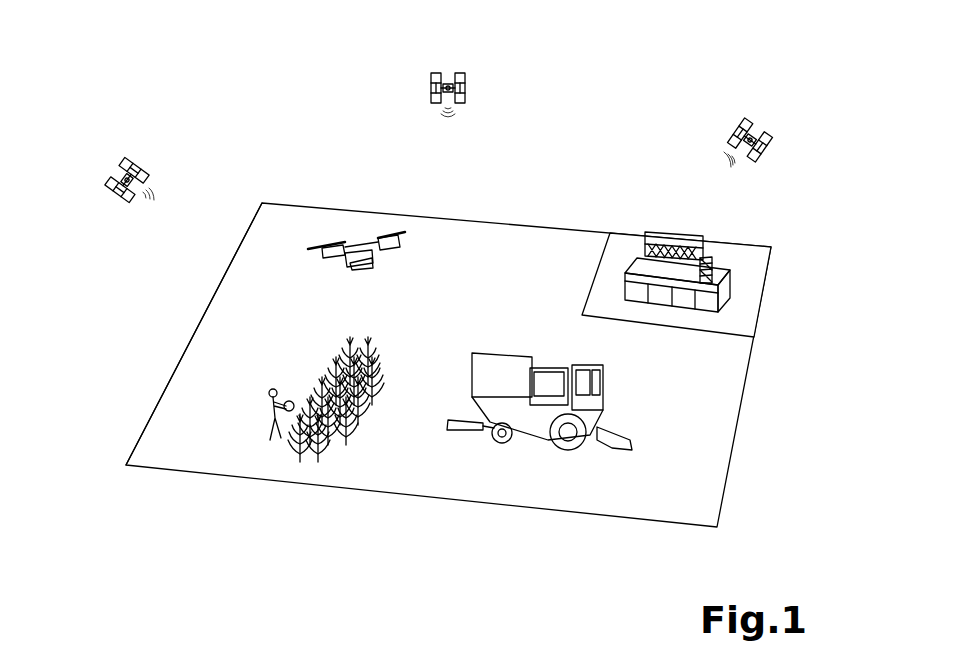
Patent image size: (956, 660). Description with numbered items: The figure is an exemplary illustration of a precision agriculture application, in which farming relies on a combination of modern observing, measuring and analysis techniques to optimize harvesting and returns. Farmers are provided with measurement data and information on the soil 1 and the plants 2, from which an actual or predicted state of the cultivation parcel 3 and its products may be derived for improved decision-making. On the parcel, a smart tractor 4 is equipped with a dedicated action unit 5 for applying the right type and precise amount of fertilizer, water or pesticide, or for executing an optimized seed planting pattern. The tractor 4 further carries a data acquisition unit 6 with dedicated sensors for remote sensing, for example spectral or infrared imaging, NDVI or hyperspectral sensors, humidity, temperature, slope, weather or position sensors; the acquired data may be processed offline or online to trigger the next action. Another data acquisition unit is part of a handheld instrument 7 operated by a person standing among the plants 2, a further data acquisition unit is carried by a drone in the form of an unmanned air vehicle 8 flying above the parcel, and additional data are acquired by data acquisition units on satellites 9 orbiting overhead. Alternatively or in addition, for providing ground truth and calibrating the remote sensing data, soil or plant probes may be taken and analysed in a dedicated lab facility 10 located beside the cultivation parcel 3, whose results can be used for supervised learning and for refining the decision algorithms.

The soil 1 is at (178, 412).
The plants 2 is at (208, 373).
The cultivation parcel 3 is at (147, 334).
The smart tractor 4 is at (642, 438).
The action unit 5 is at (665, 480).
The data acquisition unit 6 is at (717, 419).
The handheld instrument 7 is at (164, 469).
The unmanned air vehicle 8 is at (220, 144).
The satellites 9 is at (792, 119).
The lab facility 10 is at (750, 259).